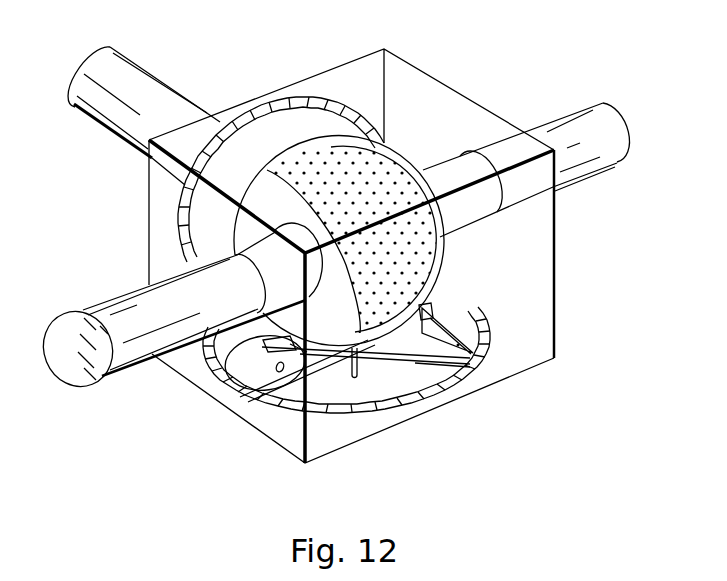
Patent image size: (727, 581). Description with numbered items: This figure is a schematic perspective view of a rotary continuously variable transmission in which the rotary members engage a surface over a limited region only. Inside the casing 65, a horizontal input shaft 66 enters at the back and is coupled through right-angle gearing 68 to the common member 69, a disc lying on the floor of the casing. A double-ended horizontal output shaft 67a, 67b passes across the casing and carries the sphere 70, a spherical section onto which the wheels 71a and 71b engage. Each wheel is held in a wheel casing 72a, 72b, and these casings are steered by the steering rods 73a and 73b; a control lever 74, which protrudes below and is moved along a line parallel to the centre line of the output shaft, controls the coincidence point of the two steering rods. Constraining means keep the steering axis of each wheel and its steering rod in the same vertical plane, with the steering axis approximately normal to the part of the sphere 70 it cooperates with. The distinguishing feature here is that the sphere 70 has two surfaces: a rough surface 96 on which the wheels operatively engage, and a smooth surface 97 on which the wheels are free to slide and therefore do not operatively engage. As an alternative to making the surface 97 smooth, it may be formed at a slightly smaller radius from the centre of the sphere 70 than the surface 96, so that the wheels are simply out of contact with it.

The casing 65 is at (456, 88).
The input shaft 66 is at (89, 119).
The output shaft 67a is at (108, 292).
The output shaft 67b is at (588, 182).
The gearing 68 is at (323, 97).
The common member 69 is at (281, 417).
The sphere 70 is at (444, 250).
The wheel 71a is at (262, 343).
The wheel 71b is at (432, 306).
The wheel casing 72a is at (258, 389).
The wheel casing 72b is at (463, 325).
The steering rod 73a is at (323, 385).
The steering rod 73b is at (418, 362).
The control lever 74 is at (398, 394).
The rough surface 96 is at (302, 152).
The smooth surface 97 is at (398, 165).